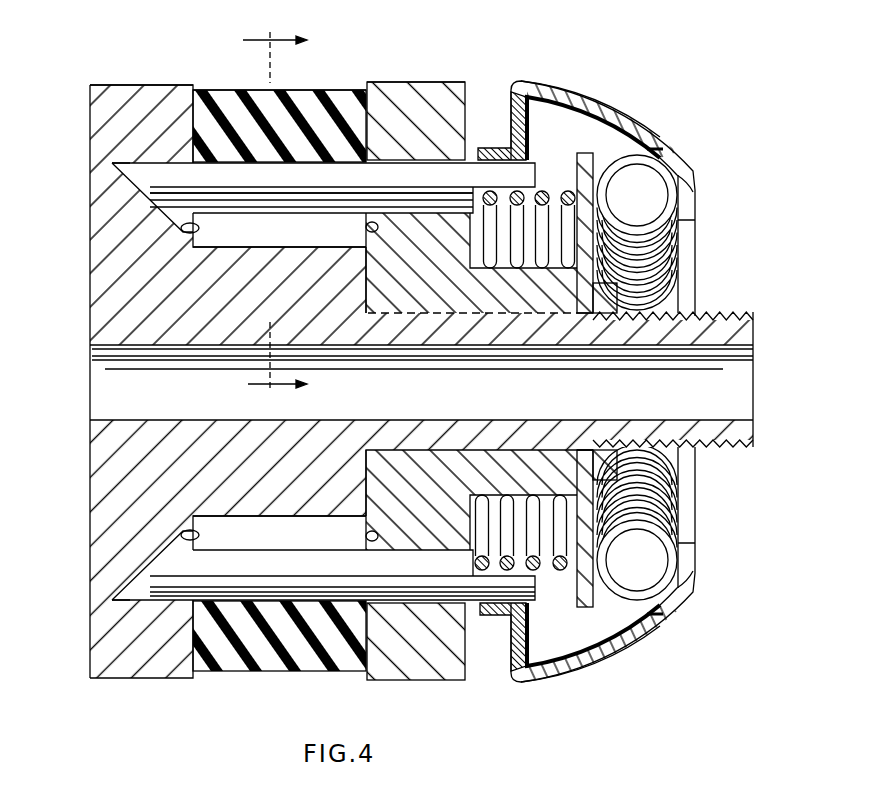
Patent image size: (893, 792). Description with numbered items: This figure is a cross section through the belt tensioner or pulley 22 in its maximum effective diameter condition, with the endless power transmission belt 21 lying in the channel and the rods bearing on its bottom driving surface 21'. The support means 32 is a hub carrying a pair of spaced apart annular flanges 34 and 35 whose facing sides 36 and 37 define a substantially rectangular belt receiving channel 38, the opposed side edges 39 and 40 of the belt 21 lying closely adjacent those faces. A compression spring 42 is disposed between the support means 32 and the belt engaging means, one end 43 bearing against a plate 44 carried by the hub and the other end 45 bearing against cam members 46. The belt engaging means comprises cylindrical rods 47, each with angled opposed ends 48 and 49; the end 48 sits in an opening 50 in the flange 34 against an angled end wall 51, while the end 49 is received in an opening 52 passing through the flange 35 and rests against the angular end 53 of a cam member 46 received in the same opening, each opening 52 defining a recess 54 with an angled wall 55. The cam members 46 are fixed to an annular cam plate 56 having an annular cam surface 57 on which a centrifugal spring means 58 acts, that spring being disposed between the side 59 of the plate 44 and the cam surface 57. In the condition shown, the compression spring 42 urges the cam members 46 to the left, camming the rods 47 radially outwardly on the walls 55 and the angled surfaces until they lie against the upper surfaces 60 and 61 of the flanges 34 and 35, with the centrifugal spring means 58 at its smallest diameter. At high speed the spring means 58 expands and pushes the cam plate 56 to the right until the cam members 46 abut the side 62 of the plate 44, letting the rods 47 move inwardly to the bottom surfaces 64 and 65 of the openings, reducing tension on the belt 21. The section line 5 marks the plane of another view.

The belt tensioner 22 is at (722, 126).
The support means 32 is at (113, 305).
The annular flange 34 is at (110, 85).
The annular flange 35 is at (427, 83).
The facing side 36 is at (212, 88).
The facing side 37 is at (360, 92).
The belt receiving channel 38 is at (290, 120).
The side edge 39 is at (192, 125).
The side edge 40 is at (372, 113).
The compression spring 42 is at (556, 186).
The spring end 43 is at (625, 145).
The plate 44 is at (605, 132).
The spring end 45 is at (483, 572).
The cam member 46 is at (512, 150).
The cylindrical rod 47 is at (333, 193).
The angled end 48 is at (135, 175).
The angled end 49 is at (427, 163).
The opening 50 is at (113, 164).
The angled end wall 51 is at (172, 228).
The opening 52 is at (477, 153).
The angular end 53 is at (366, 153).
The recess 54 is at (397, 222).
The angled wall 55 is at (418, 228).
The annular cam plate 56 is at (643, 633).
The annular cam surface 57 is at (576, 640).
The centrifugal spring means 58 is at (684, 500).
The side of plate 59 is at (668, 588).
The upper surface 60 is at (192, 155).
The upper surface 61 is at (395, 165).
The side of plate 62 is at (575, 572).
The bottom surface 64 is at (193, 234).
The bottom surface 65 is at (370, 224).
The endless power transmission belt 21 is at (369, 62).
The bottom driving surface 21' is at (311, 201).
The section line 5 is at (280, 212).